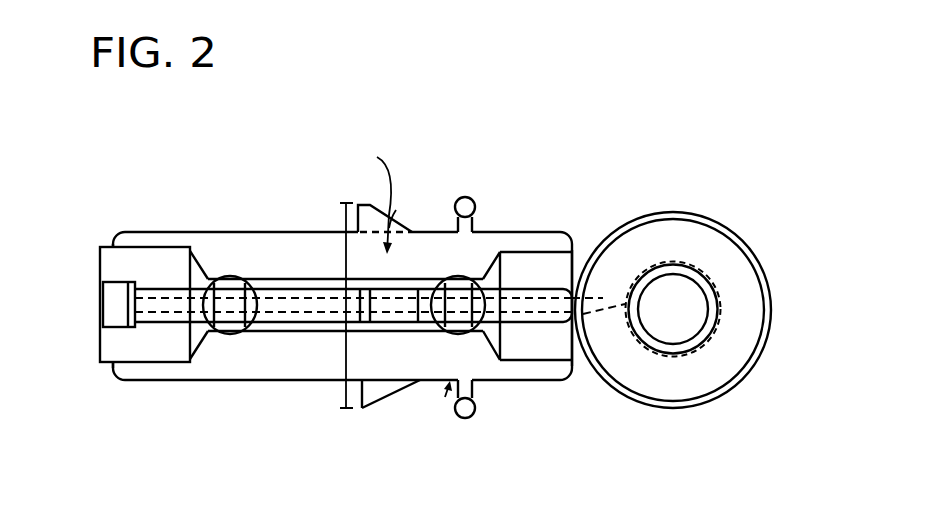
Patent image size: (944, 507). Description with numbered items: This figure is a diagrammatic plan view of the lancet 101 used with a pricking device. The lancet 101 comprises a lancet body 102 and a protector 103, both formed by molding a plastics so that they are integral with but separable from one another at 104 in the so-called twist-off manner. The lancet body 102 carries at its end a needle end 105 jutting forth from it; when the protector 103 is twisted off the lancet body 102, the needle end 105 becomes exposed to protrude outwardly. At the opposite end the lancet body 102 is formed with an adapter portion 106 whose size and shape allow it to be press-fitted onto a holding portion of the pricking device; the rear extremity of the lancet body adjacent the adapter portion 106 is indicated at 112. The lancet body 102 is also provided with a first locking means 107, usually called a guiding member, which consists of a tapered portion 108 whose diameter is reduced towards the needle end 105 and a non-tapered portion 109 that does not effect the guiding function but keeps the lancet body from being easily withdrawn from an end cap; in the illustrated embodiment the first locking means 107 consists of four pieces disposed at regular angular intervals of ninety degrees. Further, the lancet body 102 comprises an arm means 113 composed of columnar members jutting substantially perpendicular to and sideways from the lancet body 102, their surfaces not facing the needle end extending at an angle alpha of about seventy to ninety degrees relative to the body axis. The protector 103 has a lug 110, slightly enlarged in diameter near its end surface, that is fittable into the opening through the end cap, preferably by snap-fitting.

The lancet 101 is at (329, 290).
The lancet body 102 is at (277, 380).
The protector 103 is at (705, 308).
The twist-off separation point 104 is at (583, 249).
The needle end 105 is at (603, 298).
The adapter portion 106 is at (147, 370).
The first locking means 107 is at (397, 227).
The tapered portion 108 is at (398, 393).
The non-tapered portion 109 is at (363, 408).
The lug 110 is at (655, 348).
The end cap 112 is at (112, 343).
The arm means 113 is at (475, 408).